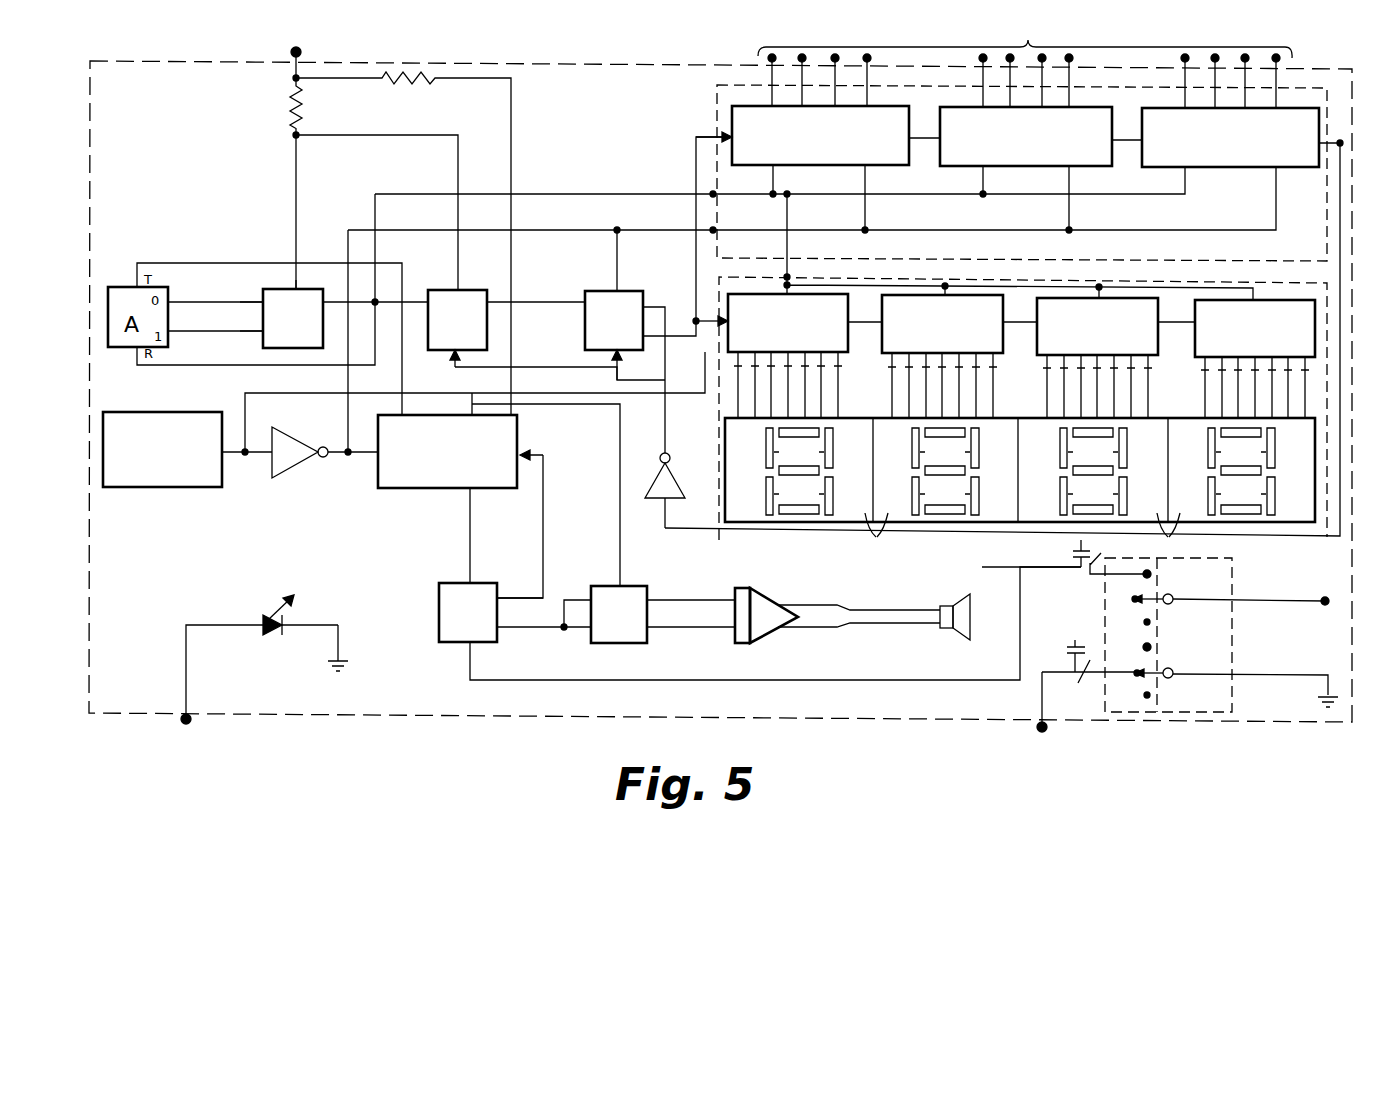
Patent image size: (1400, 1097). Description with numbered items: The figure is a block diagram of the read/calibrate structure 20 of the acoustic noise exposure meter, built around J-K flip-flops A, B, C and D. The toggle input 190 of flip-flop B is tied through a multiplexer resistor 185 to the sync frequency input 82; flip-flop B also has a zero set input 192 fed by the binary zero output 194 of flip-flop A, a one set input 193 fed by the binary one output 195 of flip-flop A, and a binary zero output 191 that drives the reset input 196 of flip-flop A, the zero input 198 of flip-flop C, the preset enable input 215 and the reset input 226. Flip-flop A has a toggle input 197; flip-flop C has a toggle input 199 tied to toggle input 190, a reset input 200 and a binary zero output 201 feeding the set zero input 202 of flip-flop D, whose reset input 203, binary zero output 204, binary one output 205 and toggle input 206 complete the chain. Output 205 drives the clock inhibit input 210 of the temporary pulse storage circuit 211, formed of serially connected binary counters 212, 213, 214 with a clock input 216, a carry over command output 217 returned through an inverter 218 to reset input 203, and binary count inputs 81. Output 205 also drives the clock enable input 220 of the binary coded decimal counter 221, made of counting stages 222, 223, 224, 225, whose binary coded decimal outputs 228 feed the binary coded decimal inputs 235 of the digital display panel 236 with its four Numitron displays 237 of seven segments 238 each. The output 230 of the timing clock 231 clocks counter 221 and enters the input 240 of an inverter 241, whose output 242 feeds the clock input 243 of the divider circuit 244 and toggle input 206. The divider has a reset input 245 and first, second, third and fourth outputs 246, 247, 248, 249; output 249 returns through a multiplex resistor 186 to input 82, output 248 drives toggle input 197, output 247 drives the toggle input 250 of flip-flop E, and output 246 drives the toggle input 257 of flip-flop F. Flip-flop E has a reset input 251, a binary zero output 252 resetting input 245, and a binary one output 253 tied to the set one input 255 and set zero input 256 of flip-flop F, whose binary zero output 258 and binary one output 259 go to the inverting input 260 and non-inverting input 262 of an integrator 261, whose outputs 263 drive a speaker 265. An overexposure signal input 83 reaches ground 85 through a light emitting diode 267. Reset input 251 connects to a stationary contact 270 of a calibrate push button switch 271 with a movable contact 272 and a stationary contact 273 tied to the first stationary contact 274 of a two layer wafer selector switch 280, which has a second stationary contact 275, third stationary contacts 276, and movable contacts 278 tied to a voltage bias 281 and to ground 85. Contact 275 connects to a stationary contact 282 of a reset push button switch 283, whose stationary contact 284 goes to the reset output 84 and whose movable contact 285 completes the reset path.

The read/calibrate structure 20 is at (182, 61).
The binary count inputs 81 is at (870, 56).
The sync frequency input 82 is at (300, 50).
The overexposure signal input 83 is at (185, 724).
The reset output 84 is at (1042, 732).
The ground 85 is at (328, 666).
The multiplexer resistor 185 is at (290, 112).
The multiplex resistor 186 is at (422, 85).
The toggle input 190 is at (292, 289).
The binary zero output 191 is at (330, 280).
The zero set input 192 is at (263, 302).
The one set input 193 is at (263, 331).
The binary zero output 194 is at (168, 305).
The binary one output 195 is at (168, 333).
The reset input 196 is at (137, 360).
The toggle input 197 is at (137, 282).
The zero input 198 is at (440, 294).
The toggle input 199 is at (428, 298).
The reset input 200 is at (453, 356).
The binary zero output 201 is at (488, 294).
The set zero input 202 is at (585, 305).
The reset input 203 is at (611, 355).
The binary zero output 204 is at (641, 300).
The binary one output 205 is at (646, 340).
The toggle input 206 is at (598, 292).
The clock inhibit input 210 is at (718, 133).
The temporary pulse storage circuit 211 is at (717, 87).
The binary counter 212 is at (836, 111).
The binary counter 213 is at (1041, 112).
The binary counter 214 is at (1230, 112).
The preset enable input 215 is at (714, 194).
The clock input 216 is at (714, 230).
The carry over command output 217 is at (1342, 143).
The inverter 218 is at (670, 462).
The clock enable input 220 is at (728, 322).
The binary coded decimal counter 221 is at (1330, 292).
The binary coded decimal counting stage 222 is at (805, 323).
The binary coded decimal counting stage 223 is at (959, 324).
The binary coded decimal counting stage 224 is at (1116, 326).
The binary coded decimal counting stage 225 is at (1255, 328).
The reset input 226 is at (789, 278).
The binary coded decimal outputs 228 is at (743, 360).
The output 230 is at (226, 462).
The timing clock 231 is at (172, 402).
The binary coded decimal inputs 235 is at (738, 412).
The digital display panel 236 is at (750, 522).
The digital Numitron display 237 is at (877, 537).
The illuminating display segment 238 is at (1020, 471).
The input 240 is at (272, 462).
The inverter 241 is at (292, 430).
The output 242 is at (324, 458).
The clock input 243 is at (378, 456).
The divider circuit 244 is at (416, 488).
The reset input 245 is at (528, 454).
The first output 246 is at (472, 404).
The second output 247 is at (484, 488).
The third output 248 is at (402, 415).
The fourth output 249 is at (517, 416).
The toggle input 250 is at (465, 583).
The reset input 251 is at (462, 645).
The binary zero output 252 is at (497, 597).
The binary one output 253 is at (497, 630).
The set one input 255 is at (591, 630).
The set zero input 256 is at (591, 598).
The toggle input 257 is at (618, 586).
The binary zero output 258 is at (647, 600).
The binary one output 259 is at (647, 630).
The inverting input 260 is at (740, 594).
The integrator 261 is at (790, 582).
The non-inverting input 262 is at (736, 640).
The outputs 263 is at (820, 612).
The speaker 265 is at (960, 640).
The light emitting diode 267 is at (265, 636).
The stationary contact 270 is at (1011, 569).
The calibrate push button switch 271 is at (1040, 553).
The movable contact 272 is at (1078, 551).
The stationary contact 273 is at (1092, 562).
The first stationary contact 274 is at (1150, 574).
The second stationary contact 275 is at (1136, 672).
The third stationary contact 276 is at (1150, 621).
The movable contact 278 is at (1172, 596).
The two layer wafer selector switch 280 is at (1232, 702).
The voltage bias 281 is at (1325, 606).
The stationary contact 282 is at (1084, 680).
The reset push button switch 283 is at (1075, 632).
The stationary contact 284 is at (1072, 662).
The movable contact 285 is at (1068, 646).